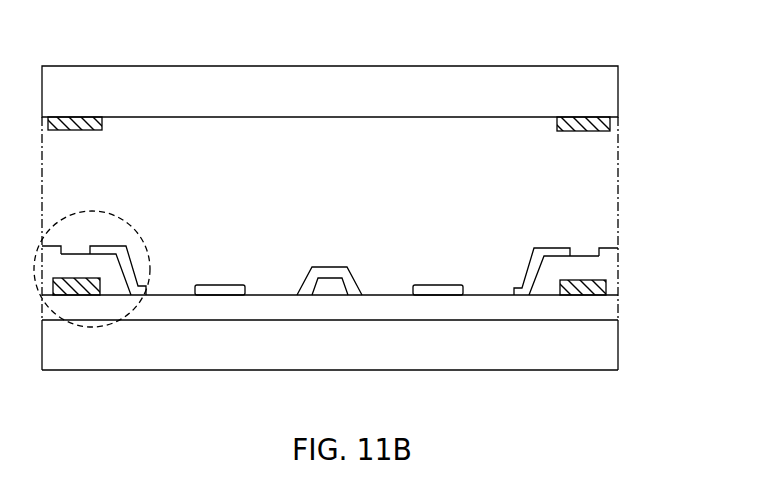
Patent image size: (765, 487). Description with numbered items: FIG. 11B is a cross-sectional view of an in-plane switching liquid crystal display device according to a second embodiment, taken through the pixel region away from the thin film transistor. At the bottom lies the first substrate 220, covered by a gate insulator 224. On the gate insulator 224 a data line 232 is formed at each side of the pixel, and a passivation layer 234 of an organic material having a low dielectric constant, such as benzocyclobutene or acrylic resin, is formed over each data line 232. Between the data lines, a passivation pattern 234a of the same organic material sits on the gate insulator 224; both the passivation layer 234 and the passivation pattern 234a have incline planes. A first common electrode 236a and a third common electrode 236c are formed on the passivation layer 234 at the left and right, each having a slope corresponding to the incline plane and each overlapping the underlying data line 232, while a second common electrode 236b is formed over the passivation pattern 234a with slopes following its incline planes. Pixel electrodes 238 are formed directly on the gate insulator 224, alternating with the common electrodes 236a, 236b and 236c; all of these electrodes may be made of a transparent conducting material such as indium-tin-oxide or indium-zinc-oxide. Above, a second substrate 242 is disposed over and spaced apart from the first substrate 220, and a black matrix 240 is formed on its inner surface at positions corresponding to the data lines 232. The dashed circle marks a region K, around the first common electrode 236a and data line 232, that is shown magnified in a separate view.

The first substrate 220 is at (353, 358).
The gate insulator 224 is at (608, 310).
The data line 232 is at (70, 276).
The passivation layer 234 is at (88, 259).
The passivation pattern 234a is at (302, 278).
The first common electrode 236a is at (117, 252).
The second common electrode 236b is at (332, 267).
The third common electrode 236c is at (542, 247).
The pixel electrodes 238 is at (223, 283).
The black matrix 240 is at (80, 117).
The second substrate 242 is at (298, 80).
The region K is at (92, 328).